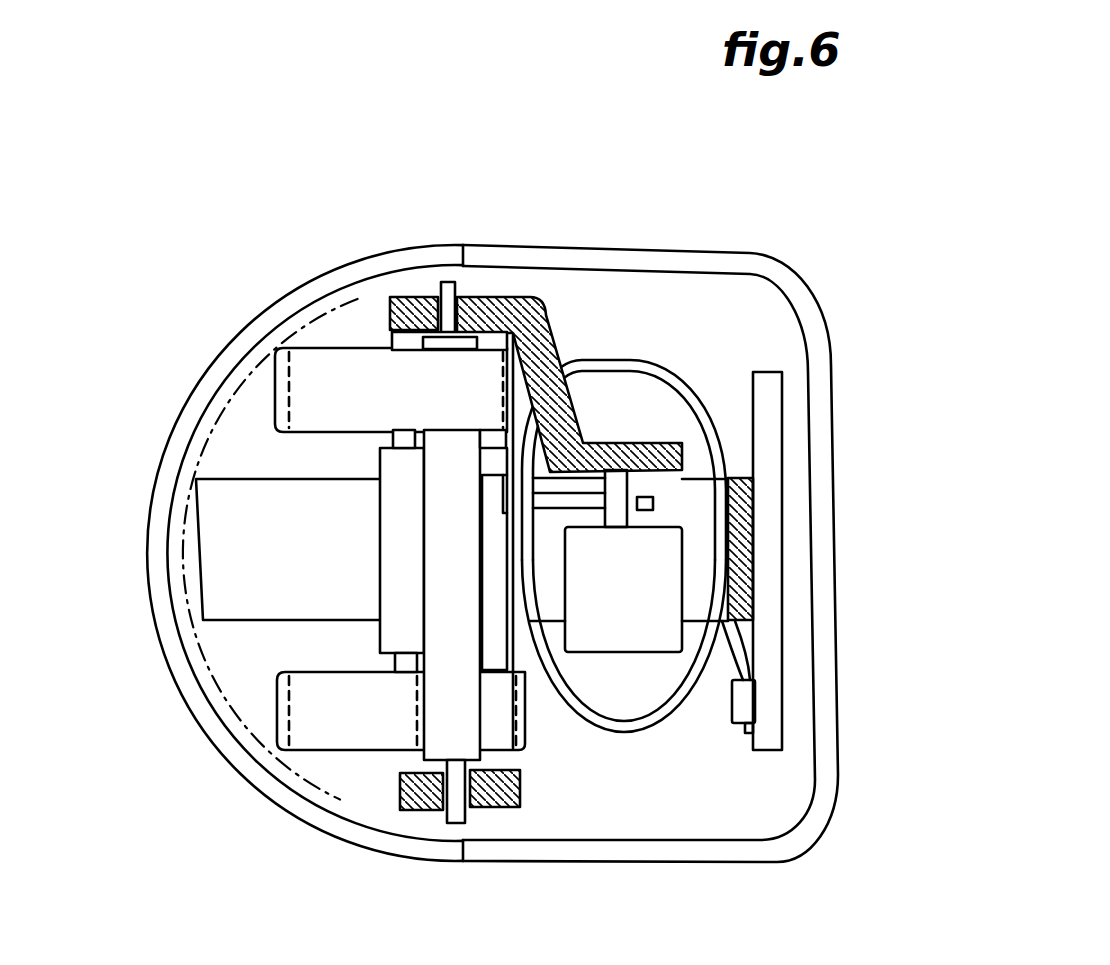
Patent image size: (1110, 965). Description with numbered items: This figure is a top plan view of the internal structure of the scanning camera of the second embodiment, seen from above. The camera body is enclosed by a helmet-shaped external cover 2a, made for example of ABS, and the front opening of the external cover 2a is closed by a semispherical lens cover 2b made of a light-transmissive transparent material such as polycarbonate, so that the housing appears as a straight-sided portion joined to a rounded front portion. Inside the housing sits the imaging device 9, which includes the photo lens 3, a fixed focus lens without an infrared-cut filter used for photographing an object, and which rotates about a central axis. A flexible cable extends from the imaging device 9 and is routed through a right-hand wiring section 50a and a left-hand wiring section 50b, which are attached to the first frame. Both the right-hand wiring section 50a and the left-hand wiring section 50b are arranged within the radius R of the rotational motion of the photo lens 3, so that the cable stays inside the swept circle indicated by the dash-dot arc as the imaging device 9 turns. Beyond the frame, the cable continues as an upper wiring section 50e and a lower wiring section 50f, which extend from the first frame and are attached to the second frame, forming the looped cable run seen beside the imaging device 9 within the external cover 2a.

The external cover 2a is at (800, 838).
The lens cover 2b is at (397, 262).
The photo lens 3 is at (240, 587).
The imaging device 9 is at (450, 713).
The right-hand wiring section 50a is at (327, 377).
The left-hand wiring section 50b is at (325, 733).
The upper wiring section 50e is at (633, 725).
The lower wiring section 50f is at (640, 362).
The radius of rotational motion R is at (455, 553).